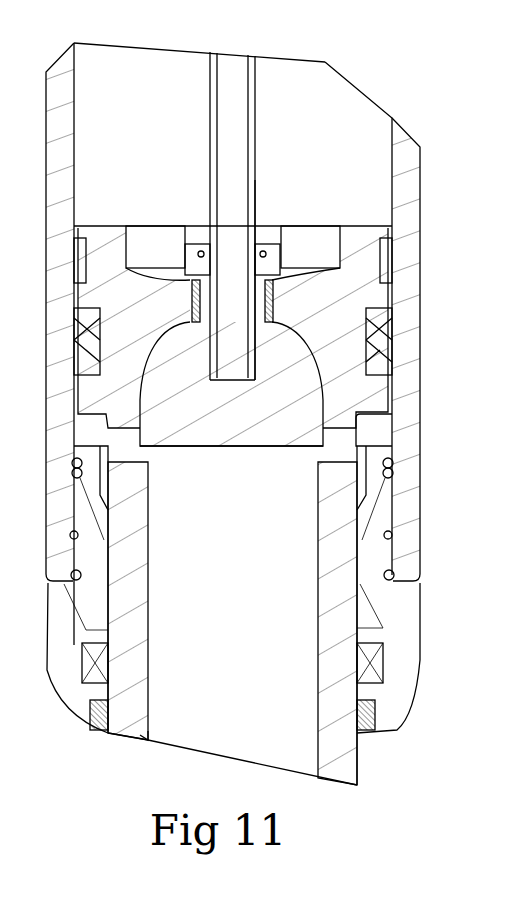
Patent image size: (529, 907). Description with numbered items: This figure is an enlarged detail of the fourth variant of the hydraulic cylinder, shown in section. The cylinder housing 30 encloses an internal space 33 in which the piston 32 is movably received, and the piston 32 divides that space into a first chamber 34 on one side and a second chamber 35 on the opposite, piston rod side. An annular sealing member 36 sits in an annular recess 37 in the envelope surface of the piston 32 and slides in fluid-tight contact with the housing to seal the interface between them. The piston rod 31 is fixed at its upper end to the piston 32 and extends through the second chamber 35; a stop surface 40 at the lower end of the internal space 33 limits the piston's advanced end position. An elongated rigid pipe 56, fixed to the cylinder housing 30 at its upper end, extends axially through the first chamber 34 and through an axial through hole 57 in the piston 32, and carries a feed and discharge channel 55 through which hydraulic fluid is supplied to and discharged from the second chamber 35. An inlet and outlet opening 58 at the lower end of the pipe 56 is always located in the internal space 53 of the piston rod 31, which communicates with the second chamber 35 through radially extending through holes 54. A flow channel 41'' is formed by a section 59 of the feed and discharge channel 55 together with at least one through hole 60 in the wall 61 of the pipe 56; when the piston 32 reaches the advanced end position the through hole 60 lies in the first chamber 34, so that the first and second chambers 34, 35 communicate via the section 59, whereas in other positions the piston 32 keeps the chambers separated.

The cylinder housing 30 is at (410, 182).
The piston rod 31 is at (328, 694).
The piston 32 is at (348, 226).
The internal space 33 is at (357, 127).
The first chamber 34 is at (342, 97).
The second chamber 35 is at (380, 422).
The annular sealing member 36 is at (388, 342).
The annular recess 37 is at (375, 308).
The stop surface 40 is at (380, 443).
The flow channel 41'' is at (176, 300).
The internal space of the piston rod 53 is at (298, 570).
The through holes 54 is at (141, 452).
The feed and discharge channel 55 is at (228, 150).
The pipe 56 is at (254, 105).
The axial through hole 57 is at (228, 284).
The inlet and outlet opening 58 is at (228, 382).
The section of the feed and discharge channel 59 is at (228, 323).
The through hole 60 is at (259, 280).
The wall of the pipe 61 is at (254, 200).